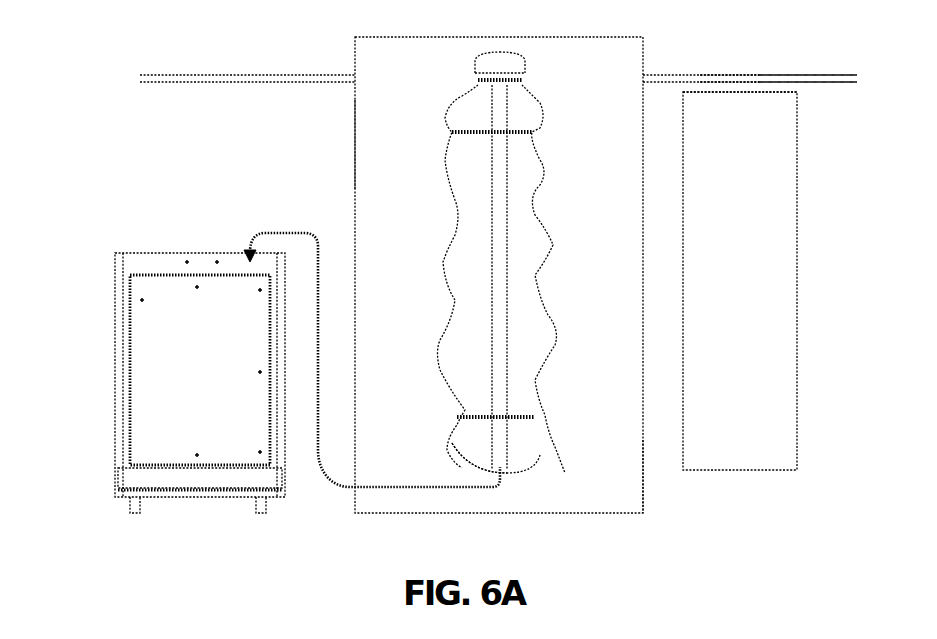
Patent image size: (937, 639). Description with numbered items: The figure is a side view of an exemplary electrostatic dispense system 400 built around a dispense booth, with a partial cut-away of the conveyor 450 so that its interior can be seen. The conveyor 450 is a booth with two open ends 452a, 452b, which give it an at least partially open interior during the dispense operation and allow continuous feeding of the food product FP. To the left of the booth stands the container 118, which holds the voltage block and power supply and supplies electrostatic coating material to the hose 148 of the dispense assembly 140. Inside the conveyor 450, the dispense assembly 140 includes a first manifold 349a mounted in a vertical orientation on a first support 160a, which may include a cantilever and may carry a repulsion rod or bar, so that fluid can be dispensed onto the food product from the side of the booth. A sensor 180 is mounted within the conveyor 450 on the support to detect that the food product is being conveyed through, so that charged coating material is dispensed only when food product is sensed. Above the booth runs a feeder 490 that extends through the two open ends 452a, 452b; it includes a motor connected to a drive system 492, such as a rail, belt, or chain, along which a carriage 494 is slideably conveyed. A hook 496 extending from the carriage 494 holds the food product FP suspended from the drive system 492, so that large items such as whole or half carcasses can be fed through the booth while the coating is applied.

The electrostatic dispense system 400 is at (95, 85).
The container 118 is at (98, 290).
The hose 148 is at (320, 452).
The dispense assembly 140 is at (475, 472).
The conveyor 450 is at (398, 172).
The open end 452a is at (643, 497).
The open end 452b is at (355, 145).
The sensor 180 is at (520, 135).
The first manifold 349a is at (500, 290).
The first support 160a is at (575, 483).
The feeder 490 is at (757, 55).
The drive system 492 is at (800, 75).
The carriage 494 is at (740, 75).
The hook 496 is at (738, 83).